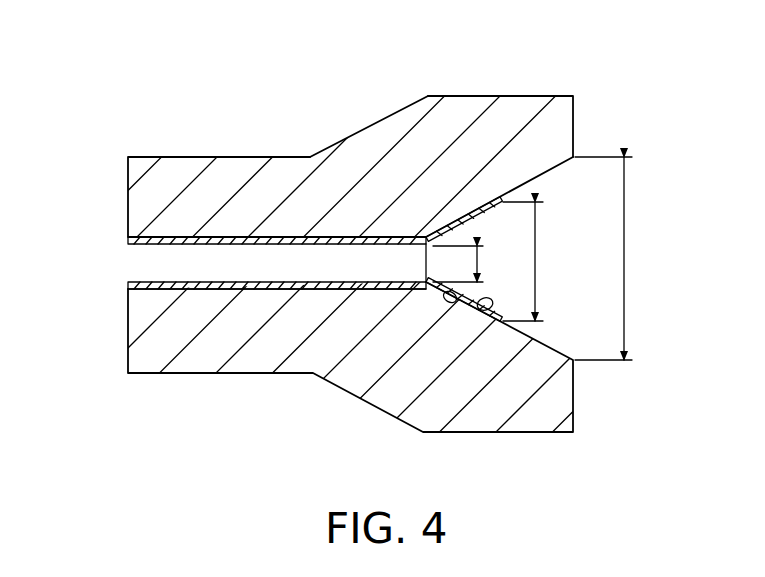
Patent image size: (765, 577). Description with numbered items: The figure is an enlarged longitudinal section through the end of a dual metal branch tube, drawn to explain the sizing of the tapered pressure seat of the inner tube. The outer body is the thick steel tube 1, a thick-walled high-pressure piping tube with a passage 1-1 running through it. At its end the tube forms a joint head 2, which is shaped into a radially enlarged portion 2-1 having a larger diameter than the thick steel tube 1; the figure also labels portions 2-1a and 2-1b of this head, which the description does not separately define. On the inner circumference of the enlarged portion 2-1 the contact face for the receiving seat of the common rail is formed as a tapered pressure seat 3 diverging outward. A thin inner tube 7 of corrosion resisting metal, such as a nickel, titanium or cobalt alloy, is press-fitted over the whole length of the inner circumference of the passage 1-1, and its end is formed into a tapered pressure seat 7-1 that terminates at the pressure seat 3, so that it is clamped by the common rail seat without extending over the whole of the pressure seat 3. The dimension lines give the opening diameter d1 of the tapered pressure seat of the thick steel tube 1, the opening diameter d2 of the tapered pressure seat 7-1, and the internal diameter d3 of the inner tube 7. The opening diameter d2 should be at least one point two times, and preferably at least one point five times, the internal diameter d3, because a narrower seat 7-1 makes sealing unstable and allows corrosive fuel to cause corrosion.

The thick steel tube 1 is at (213, 352).
The passage 1-1 is at (128, 279).
The joint head 2 is at (378, 98).
The radially enlarged portion 2-1 is at (460, 107).
The inclined surface of cover member 2-1a is at (365, 127).
The top surface of thick portion 2-1b is at (528, 95).
The tapered pressure seat 3 is at (442, 299).
The thin inner tube 7 is at (128, 258).
The tapered pressure seat of the inner tube 7-1 is at (487, 303).
The opening diameter of the tapered pressure seat of the thick steel tube d1 is at (615, 258).
The opening diameter of the tapered pressure seat of the inner tube d2 is at (535, 261).
The internal diameter of the inner tube d3 is at (472, 264).